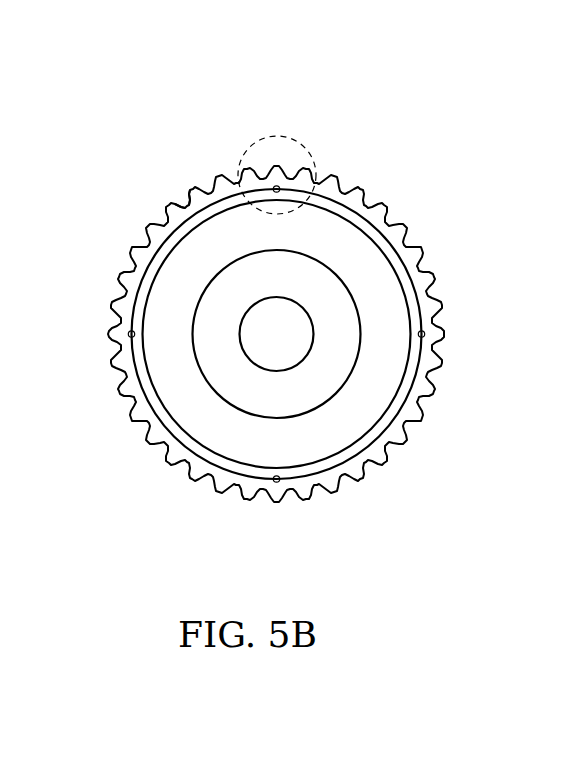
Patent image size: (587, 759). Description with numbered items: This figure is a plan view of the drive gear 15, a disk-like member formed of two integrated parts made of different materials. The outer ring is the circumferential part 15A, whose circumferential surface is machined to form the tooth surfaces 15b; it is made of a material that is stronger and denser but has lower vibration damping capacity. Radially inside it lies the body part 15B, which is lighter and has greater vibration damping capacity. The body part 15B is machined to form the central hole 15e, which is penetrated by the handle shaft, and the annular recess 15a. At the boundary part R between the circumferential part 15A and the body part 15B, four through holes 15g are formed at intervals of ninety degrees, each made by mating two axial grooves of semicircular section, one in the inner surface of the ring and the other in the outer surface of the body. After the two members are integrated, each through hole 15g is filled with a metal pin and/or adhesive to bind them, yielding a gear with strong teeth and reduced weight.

The drive gear 15 is at (275, 279).
The circumferential part 15A is at (378, 215).
The body part 15B is at (411, 290).
The annular recess 15a is at (433, 402).
The tooth surfaces 15b is at (195, 183).
The hole 15e is at (294, 360).
The through holes 15g is at (275, 186).
The boundary part R is at (180, 223).